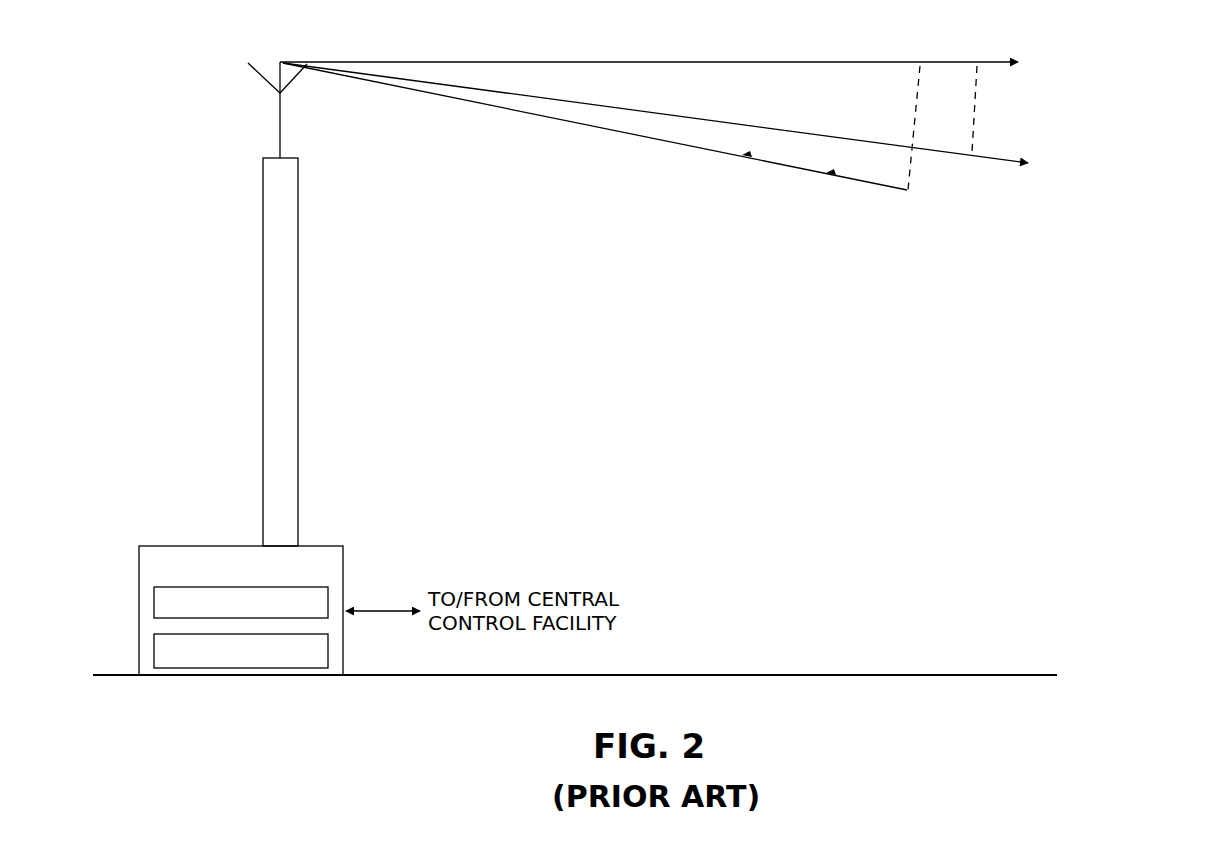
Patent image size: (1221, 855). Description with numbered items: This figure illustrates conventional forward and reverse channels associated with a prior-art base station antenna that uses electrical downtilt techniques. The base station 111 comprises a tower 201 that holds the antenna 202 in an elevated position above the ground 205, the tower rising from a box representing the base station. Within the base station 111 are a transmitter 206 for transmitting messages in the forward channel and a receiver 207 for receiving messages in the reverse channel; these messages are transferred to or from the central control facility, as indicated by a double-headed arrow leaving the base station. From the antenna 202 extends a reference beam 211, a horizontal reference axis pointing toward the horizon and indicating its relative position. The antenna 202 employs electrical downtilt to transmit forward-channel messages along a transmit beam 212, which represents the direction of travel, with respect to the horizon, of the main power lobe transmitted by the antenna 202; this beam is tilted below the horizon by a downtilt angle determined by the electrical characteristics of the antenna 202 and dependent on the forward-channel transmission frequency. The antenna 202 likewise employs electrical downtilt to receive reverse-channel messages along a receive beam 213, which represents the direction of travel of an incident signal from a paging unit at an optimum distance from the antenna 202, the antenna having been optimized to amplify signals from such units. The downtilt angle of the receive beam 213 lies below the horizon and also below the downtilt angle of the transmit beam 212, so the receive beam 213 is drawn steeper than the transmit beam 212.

The base station 111 is at (188, 546).
The tower 201 is at (298, 355).
The antenna 202 is at (258, 75).
The ground 205 is at (810, 675).
The transmitter 206 is at (154, 602).
The receiver 207 is at (154, 650).
The reference beam 211 is at (783, 62).
The transmit beam 212 is at (778, 130).
The receive beam 213 is at (625, 134).